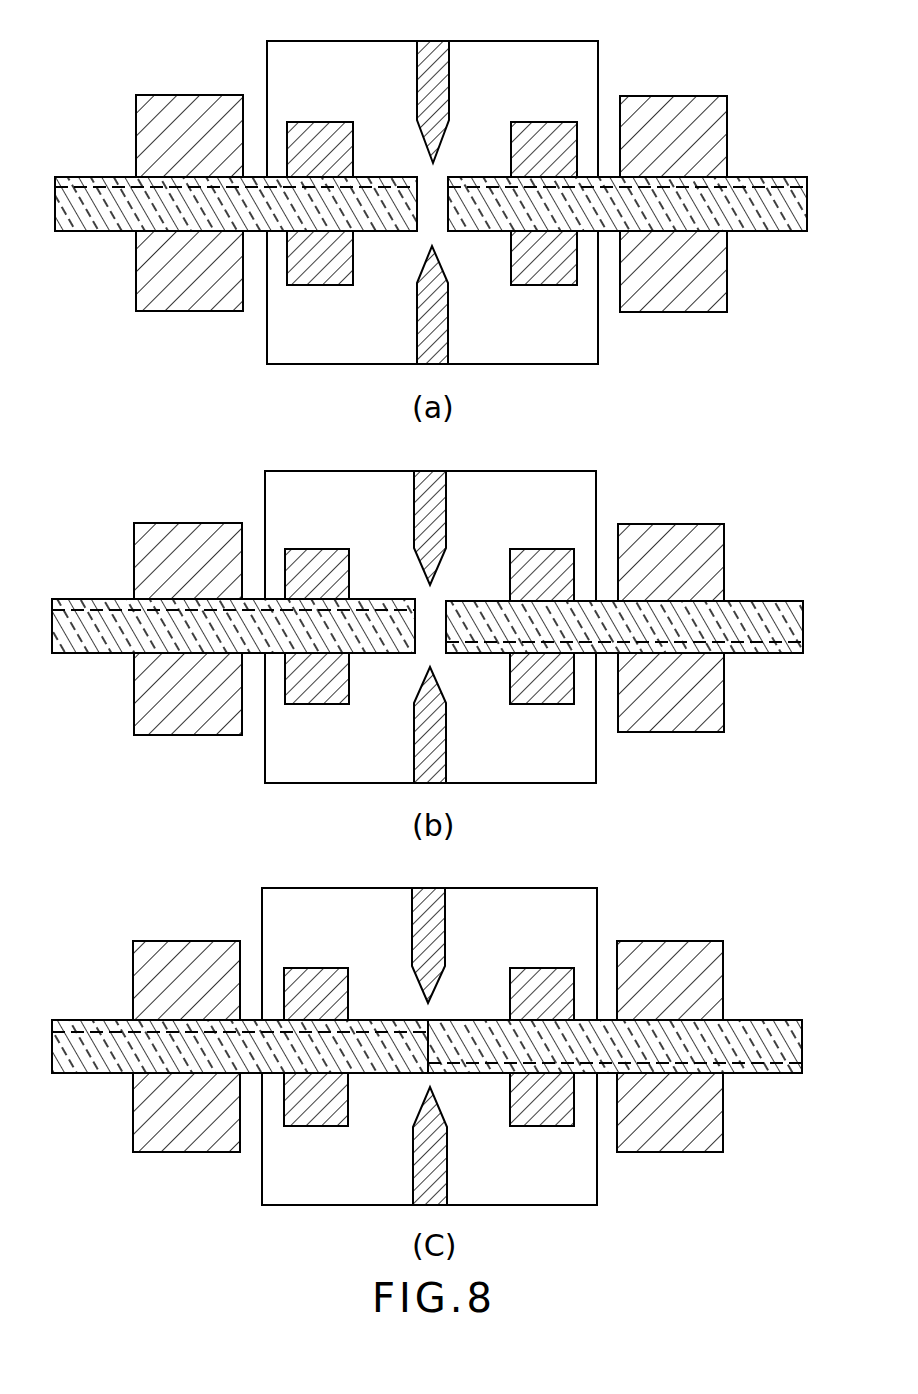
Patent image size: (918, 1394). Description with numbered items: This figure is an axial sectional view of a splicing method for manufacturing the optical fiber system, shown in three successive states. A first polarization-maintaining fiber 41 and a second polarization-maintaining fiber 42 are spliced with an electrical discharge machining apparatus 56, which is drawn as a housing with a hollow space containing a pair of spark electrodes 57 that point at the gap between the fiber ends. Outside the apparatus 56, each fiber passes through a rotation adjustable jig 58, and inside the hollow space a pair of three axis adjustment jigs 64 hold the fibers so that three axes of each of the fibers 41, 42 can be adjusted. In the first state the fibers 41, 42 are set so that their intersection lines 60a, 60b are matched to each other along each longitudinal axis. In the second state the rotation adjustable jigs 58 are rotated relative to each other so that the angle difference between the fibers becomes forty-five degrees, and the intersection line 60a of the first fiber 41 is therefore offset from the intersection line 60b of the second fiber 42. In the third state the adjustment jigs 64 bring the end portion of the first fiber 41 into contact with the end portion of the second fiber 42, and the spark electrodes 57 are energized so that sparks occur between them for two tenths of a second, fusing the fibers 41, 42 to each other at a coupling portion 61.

The first polarization-maintaining fiber 41 is at (89, 231).
The second polarization-maintaining fiber 42 is at (775, 232).
The electrical discharge machining apparatus 56 is at (599, 56).
The spark electrodes 57 is at (449, 72).
The rotation adjustable jigs 58 is at (187, 312).
The intersection line of the first polarization-maintaining fiber 60a is at (107, 185).
The intersection line of the second polarization-maintaining fiber 60b is at (775, 177).
The coupling portion 61 is at (428, 1073).
The three axis adjustment jigs 64 is at (318, 287).